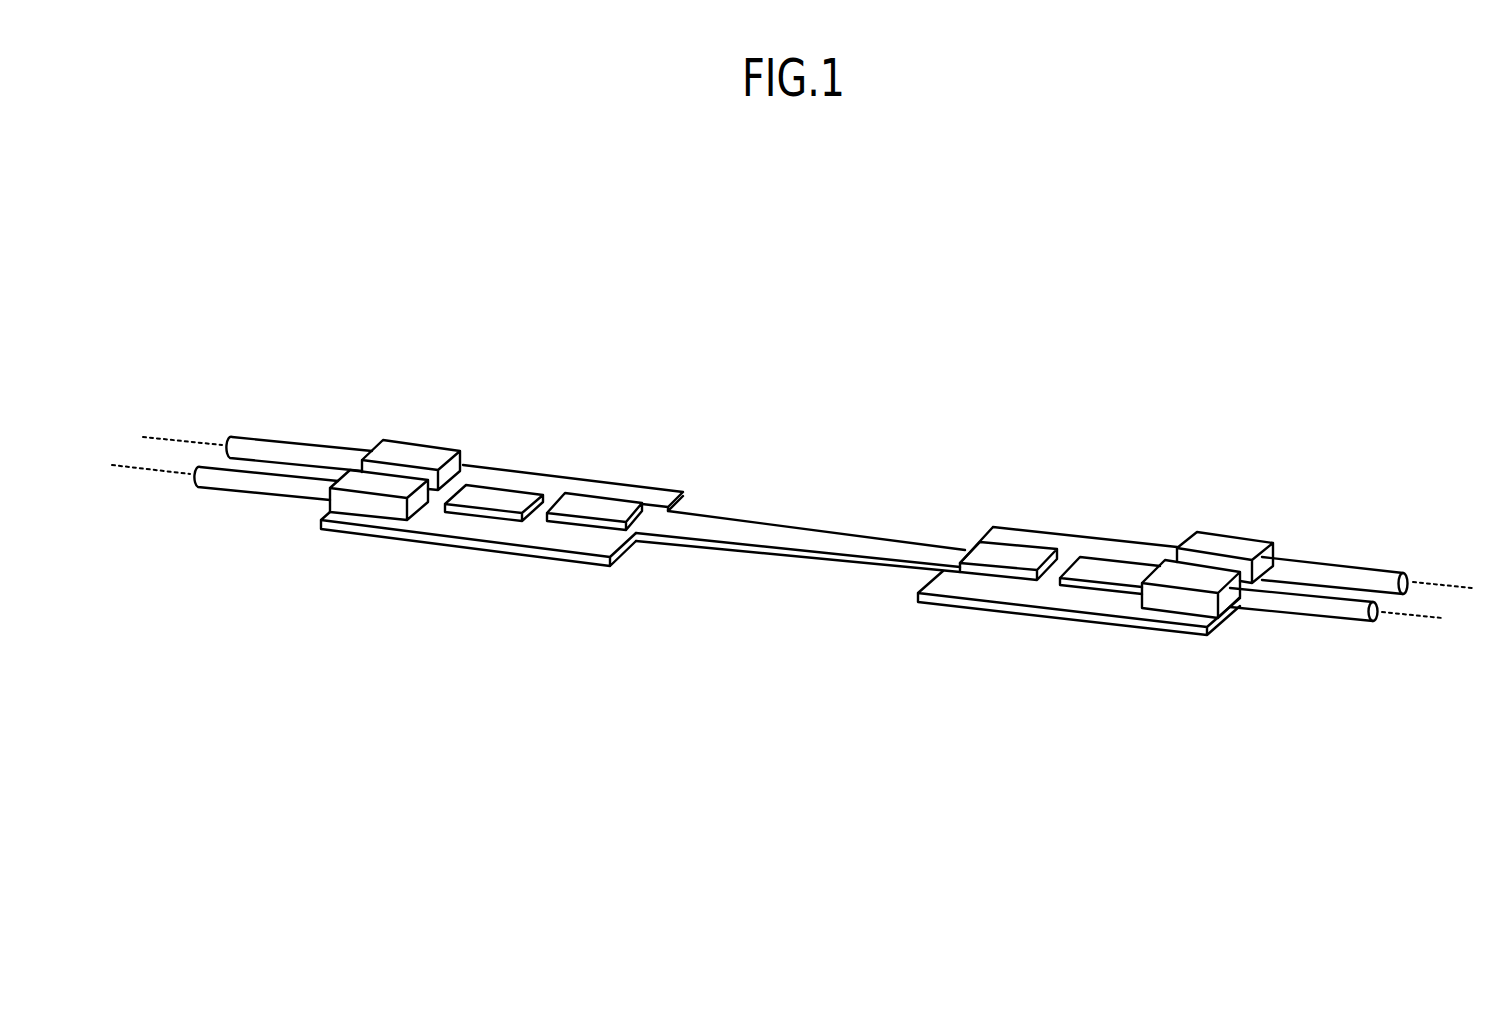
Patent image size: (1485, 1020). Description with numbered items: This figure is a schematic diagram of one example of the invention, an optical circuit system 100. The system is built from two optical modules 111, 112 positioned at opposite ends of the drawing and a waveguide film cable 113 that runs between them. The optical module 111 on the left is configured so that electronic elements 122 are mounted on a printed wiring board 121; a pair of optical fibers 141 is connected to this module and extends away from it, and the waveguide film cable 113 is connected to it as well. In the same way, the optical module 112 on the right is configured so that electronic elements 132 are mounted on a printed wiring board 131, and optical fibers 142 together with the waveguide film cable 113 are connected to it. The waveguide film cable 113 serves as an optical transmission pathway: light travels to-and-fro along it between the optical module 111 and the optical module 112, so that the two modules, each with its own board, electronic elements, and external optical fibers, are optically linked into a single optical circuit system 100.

The optical circuit system 100 is at (400, 339).
The optical module 111 is at (537, 458).
The optical module 112 is at (1084, 520).
The waveguide film cable 113 is at (820, 538).
The printed wiring board 121 is at (578, 545).
The electronic elements 122 is at (547, 520).
The printed wiring board 131 is at (980, 590).
The electronic elements 132 is at (1183, 560).
The optical fibers 141 is at (263, 470).
The optical fibers 142 is at (1317, 595).